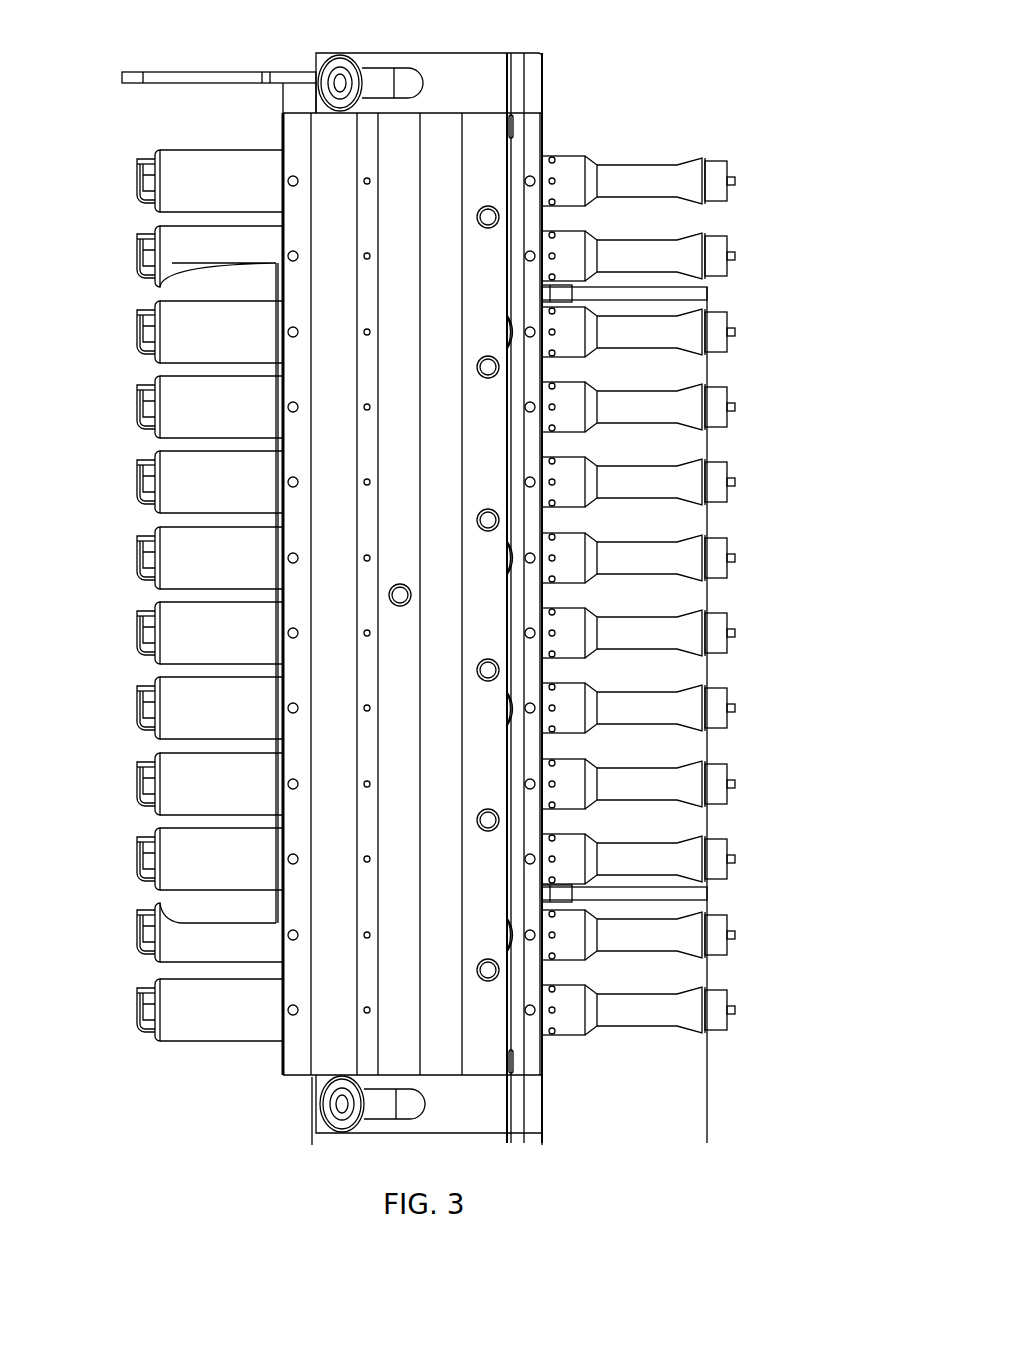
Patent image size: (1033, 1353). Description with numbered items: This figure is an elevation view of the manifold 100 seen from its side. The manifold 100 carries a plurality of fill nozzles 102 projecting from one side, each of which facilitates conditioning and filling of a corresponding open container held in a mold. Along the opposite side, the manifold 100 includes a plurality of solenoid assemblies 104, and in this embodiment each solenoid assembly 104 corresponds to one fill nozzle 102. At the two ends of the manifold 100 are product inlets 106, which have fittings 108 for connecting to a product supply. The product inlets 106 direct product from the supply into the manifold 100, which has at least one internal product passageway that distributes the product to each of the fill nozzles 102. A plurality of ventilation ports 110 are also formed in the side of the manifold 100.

The manifold 100 is at (545, 88).
The fill nozzle 102 is at (638, 1012).
The solenoid assembly 104 is at (137, 1002).
The product inlet 106 is at (378, 67).
The fitting 108 is at (318, 97).
The ventilation port 110 is at (491, 975).